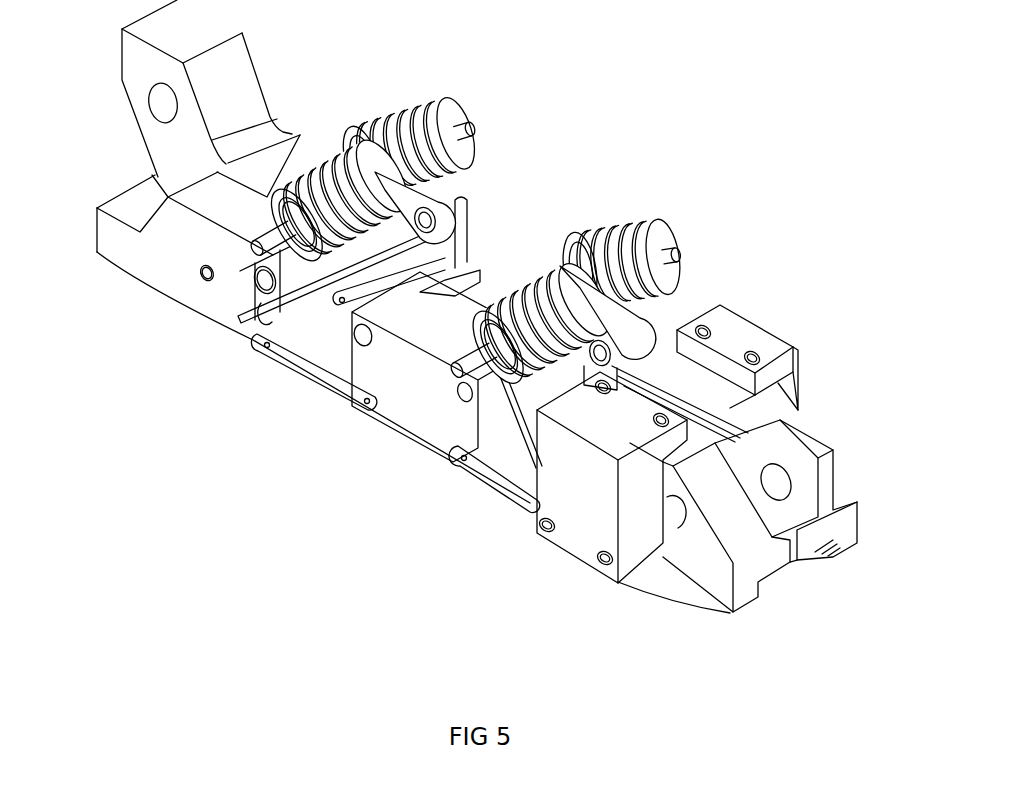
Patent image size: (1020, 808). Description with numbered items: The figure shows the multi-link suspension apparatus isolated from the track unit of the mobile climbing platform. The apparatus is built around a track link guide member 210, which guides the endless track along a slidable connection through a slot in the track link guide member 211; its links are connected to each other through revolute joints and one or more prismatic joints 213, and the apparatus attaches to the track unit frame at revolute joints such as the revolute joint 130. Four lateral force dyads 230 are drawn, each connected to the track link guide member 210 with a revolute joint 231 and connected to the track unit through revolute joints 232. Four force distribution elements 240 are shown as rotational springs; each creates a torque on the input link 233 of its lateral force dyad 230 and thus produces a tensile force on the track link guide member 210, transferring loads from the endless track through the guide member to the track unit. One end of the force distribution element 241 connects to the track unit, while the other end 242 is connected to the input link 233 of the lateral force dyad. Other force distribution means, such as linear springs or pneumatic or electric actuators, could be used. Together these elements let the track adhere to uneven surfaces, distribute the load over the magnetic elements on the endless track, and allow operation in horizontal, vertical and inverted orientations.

The revolute joint 130 is at (195, 357).
The track link guide member 210 is at (465, 406).
The slot in the track link guide member 211 is at (793, 575).
The prismatic joint 213 is at (657, 534).
The lateral force dyad 230 is at (470, 207).
The revolute joint 231 is at (478, 118).
The revolute joint 232 is at (245, 283).
The input link 233 is at (418, 180).
The force distribution element 240 is at (547, 262).
The end of the force distribution element 241 is at (243, 320).
The other end of the force distribution element 242 is at (441, 258).